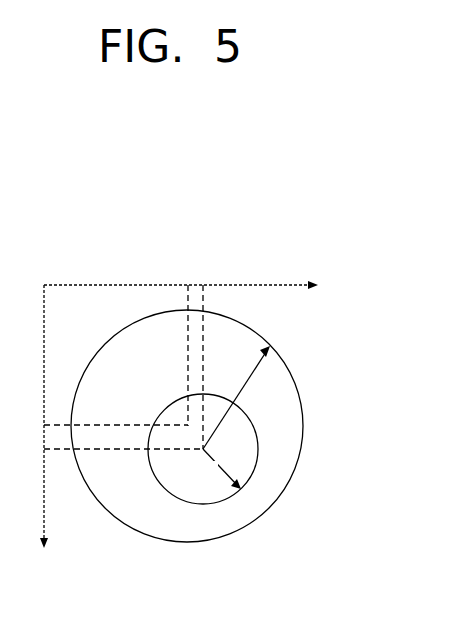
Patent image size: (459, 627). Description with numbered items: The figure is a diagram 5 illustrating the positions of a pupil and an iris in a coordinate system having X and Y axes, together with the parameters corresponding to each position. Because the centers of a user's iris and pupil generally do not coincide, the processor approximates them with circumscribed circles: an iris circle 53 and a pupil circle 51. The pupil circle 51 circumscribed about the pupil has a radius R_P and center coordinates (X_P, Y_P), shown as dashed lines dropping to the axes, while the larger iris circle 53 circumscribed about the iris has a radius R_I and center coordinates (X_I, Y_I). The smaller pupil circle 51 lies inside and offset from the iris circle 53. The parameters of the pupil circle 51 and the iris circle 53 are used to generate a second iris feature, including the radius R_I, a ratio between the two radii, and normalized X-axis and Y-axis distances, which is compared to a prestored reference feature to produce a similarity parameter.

The pattern / image region diagram 5 is at (213, 387).
The pupil circle 51 is at (257, 462).
The iris circle 53 is at (175, 541).